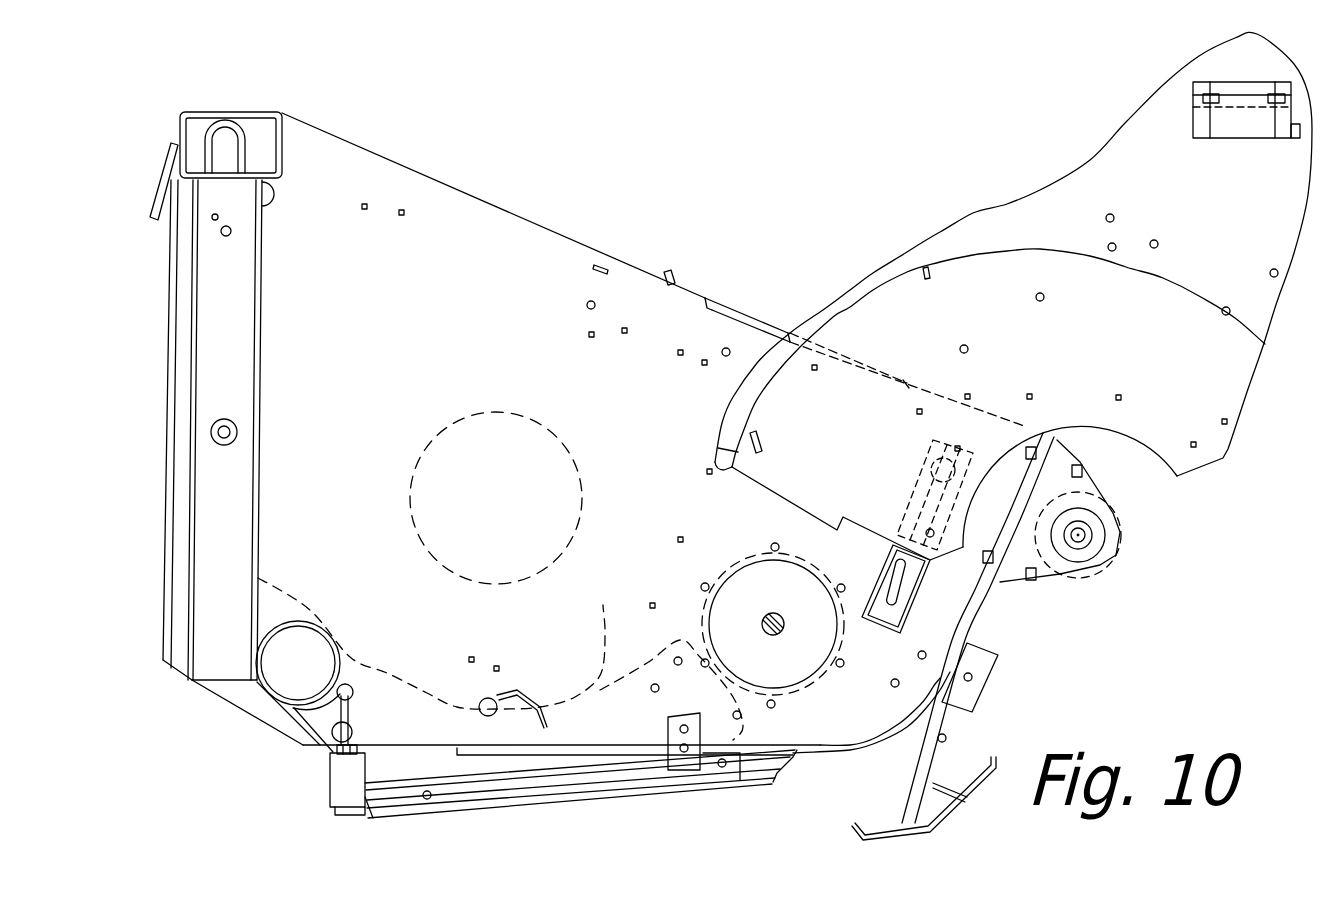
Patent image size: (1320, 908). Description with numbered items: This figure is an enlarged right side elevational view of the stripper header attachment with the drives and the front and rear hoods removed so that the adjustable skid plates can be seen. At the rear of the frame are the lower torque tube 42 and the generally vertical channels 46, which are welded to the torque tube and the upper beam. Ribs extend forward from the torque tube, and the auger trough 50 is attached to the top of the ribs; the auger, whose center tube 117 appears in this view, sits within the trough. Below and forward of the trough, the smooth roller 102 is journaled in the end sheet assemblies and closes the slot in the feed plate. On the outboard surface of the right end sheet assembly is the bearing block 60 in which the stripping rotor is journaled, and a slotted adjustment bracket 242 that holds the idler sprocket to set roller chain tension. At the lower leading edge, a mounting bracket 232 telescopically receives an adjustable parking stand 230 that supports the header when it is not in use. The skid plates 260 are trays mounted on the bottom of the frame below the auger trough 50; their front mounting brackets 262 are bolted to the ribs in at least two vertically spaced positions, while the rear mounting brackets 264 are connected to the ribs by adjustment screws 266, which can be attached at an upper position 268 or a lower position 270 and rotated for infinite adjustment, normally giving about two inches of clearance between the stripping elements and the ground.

The vertical channels 46 is at (190, 598).
The lower torque tube 42 is at (265, 697).
The adjustment screws 266 is at (323, 713).
The upper position 268 is at (350, 690).
The lower position 270 is at (336, 745).
The rear mounting brackets 264 is at (332, 790).
The center tube 117 is at (567, 453).
The auger trough 50 is at (500, 659).
The skid plates 260 is at (553, 807).
The front mounting brackets 262 is at (680, 760).
The smooth roller 102 is at (807, 680).
The adjustable parking stands 230 is at (858, 840).
The slotted adjustment bracket 242 is at (917, 593).
The mounting bracket 232 is at (985, 665).
The bearing block 60 is at (1103, 560).